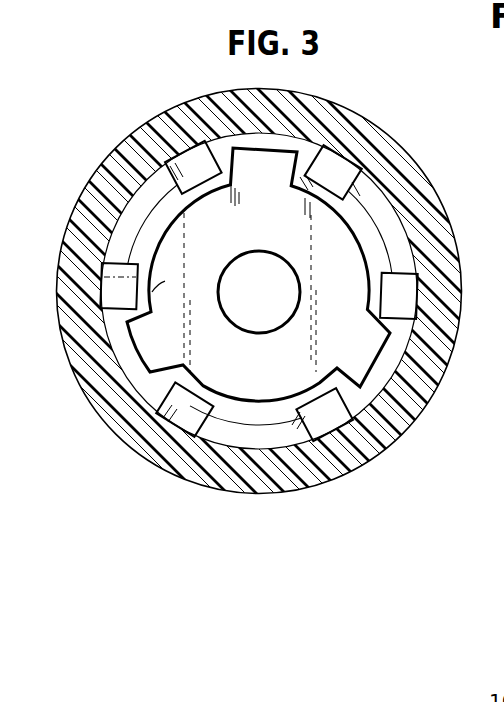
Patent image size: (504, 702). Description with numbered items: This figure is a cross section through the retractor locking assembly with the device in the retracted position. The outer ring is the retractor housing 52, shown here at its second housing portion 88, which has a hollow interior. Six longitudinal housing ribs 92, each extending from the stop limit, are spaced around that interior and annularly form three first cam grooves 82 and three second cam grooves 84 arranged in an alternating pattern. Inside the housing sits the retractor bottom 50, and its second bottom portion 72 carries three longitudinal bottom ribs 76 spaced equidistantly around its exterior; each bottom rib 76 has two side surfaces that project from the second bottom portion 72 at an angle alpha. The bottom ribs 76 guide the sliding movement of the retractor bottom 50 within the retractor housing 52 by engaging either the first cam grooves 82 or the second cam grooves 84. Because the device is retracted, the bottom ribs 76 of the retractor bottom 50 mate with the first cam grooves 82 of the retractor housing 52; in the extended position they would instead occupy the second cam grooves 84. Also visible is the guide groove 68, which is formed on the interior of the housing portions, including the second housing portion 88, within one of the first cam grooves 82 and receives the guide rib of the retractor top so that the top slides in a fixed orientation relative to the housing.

The retractor bottom 50 is at (258, 274).
The second bottom portion 72 is at (371, 363).
The bottom rib 76 is at (258, 274).
The first cam groove 82 is at (253, 137).
The second cam groove 84 is at (252, 351).
The housing rib 92 is at (389, 305).
The guide groove 68 is at (270, 131).
The retractor housing 52 is at (273, 291).
The second housing portion 88 is at (400, 156).